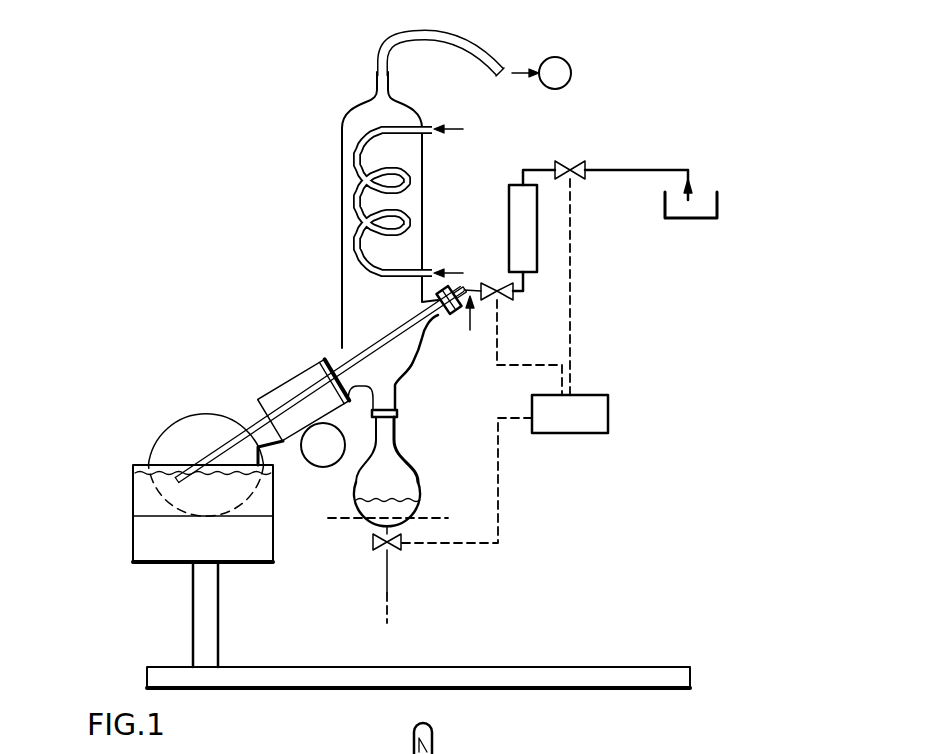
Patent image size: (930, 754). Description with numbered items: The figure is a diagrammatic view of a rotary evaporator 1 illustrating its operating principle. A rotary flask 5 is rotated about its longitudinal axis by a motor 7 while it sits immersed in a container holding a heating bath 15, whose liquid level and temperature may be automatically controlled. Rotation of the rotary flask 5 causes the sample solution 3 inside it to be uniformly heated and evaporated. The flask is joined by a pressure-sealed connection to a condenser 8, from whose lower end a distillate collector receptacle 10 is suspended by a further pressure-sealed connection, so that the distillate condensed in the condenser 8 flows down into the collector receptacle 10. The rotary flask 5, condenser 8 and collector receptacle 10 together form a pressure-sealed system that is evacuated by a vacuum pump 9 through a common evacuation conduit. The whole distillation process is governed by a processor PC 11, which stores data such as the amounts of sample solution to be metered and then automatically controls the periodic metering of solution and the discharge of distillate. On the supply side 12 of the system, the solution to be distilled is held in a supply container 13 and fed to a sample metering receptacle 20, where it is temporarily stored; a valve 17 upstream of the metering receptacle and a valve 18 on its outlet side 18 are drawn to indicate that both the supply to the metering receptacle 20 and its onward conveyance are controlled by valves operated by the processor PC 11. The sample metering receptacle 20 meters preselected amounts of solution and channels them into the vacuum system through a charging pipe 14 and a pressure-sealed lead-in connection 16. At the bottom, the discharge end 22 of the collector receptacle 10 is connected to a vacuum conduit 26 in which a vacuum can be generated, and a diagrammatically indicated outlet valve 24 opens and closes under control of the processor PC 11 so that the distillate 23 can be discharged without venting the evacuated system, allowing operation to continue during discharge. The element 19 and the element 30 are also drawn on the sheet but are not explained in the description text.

The rotary evaporator 1 is at (579, 104).
The sample solution 3 is at (180, 493).
The rotary flask 5 is at (208, 430).
The motor 7 is at (323, 445).
The condenser 8 is at (357, 200).
The vacuum pump 9 is at (557, 75).
The distillate collector receptacle 10 is at (392, 483).
The processor PC 11 is at (608, 418).
The supply side 12 is at (593, 195).
The supply container 13 is at (700, 207).
The charging pipe 14 is at (333, 357).
The heating bath 15 is at (160, 542).
The pressure-sealed lead-in connection 16 is at (448, 315).
The feed valve 17 is at (612, 168).
The outlet side 18 is at (472, 332).
The sensor 19 is at (432, 740).
The sample metering receptacle 20 is at (530, 247).
The discharge end 22 is at (425, 530).
The distillate 23 is at (388, 512).
The outlet valve 24 is at (375, 540).
The vacuum conduit 26 is at (385, 570).
The auxiliary device 30 is at (375, 753).